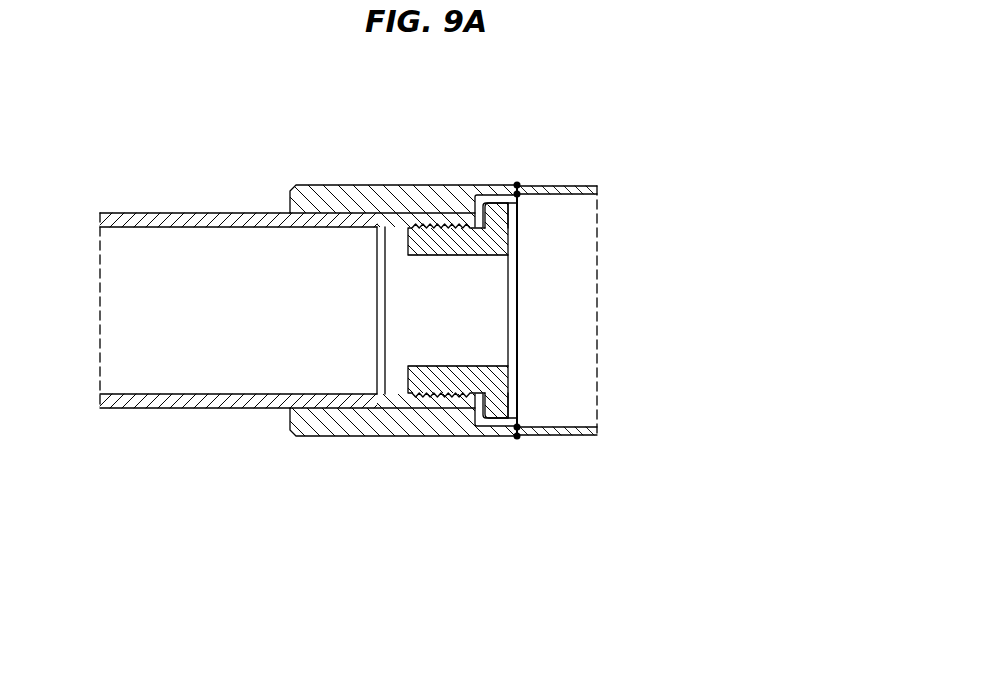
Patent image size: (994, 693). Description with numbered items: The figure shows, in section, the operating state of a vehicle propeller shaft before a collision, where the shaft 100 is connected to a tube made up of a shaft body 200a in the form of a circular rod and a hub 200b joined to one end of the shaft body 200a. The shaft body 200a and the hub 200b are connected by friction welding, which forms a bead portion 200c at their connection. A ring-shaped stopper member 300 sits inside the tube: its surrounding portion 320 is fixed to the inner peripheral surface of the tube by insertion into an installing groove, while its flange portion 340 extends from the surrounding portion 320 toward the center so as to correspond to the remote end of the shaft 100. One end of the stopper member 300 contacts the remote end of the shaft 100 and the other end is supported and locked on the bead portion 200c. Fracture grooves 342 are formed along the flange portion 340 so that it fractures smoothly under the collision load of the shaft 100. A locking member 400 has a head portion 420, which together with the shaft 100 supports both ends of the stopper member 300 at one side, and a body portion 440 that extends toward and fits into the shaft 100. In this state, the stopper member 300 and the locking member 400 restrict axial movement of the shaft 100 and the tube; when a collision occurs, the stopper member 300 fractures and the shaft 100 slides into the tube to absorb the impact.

The shaft 100 is at (198, 335).
The shaft body 200a is at (548, 207).
The hub 200b is at (385, 200).
The bead portion 200c is at (517, 185).
The stopper member 300 is at (422, 403).
The surrounding portion 320 is at (503, 420).
The flange portion 340 is at (480, 398).
The fracture grooves 342 is at (473, 405).
The locking member 400 is at (582, 310).
The head portion 420 is at (497, 233).
The body portion 440 is at (438, 255).